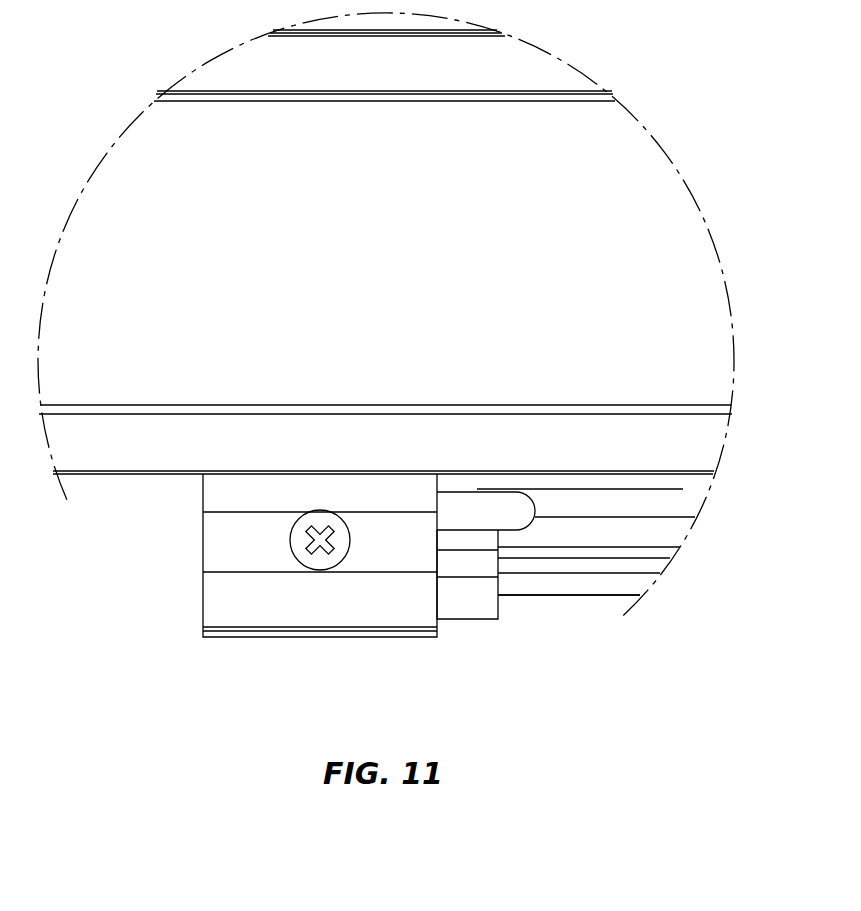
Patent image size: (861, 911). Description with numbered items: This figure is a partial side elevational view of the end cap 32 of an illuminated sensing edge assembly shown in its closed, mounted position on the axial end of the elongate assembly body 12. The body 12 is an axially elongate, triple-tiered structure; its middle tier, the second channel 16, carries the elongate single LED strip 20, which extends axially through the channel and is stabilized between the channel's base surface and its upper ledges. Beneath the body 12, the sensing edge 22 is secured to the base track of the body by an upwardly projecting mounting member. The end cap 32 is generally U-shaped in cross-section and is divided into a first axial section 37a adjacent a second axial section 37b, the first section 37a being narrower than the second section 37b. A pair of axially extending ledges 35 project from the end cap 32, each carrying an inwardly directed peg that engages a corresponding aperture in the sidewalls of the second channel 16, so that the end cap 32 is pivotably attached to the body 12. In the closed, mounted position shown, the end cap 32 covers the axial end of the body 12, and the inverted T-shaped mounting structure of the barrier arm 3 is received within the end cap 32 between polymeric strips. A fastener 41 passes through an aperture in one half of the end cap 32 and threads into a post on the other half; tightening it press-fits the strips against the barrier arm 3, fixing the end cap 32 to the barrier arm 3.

The barrier arm 3 is at (118, 229).
The elongate assembly body 12 is at (600, 536).
The second channel 16 is at (680, 491).
The LED strip 20 is at (672, 500).
The sensing edge 22 is at (585, 598).
The end cap 32 is at (263, 648).
The ledge 35 is at (507, 507).
The first axial section 37a is at (467, 602).
The second axial section 37b is at (352, 602).
The fastener 41 is at (290, 540).